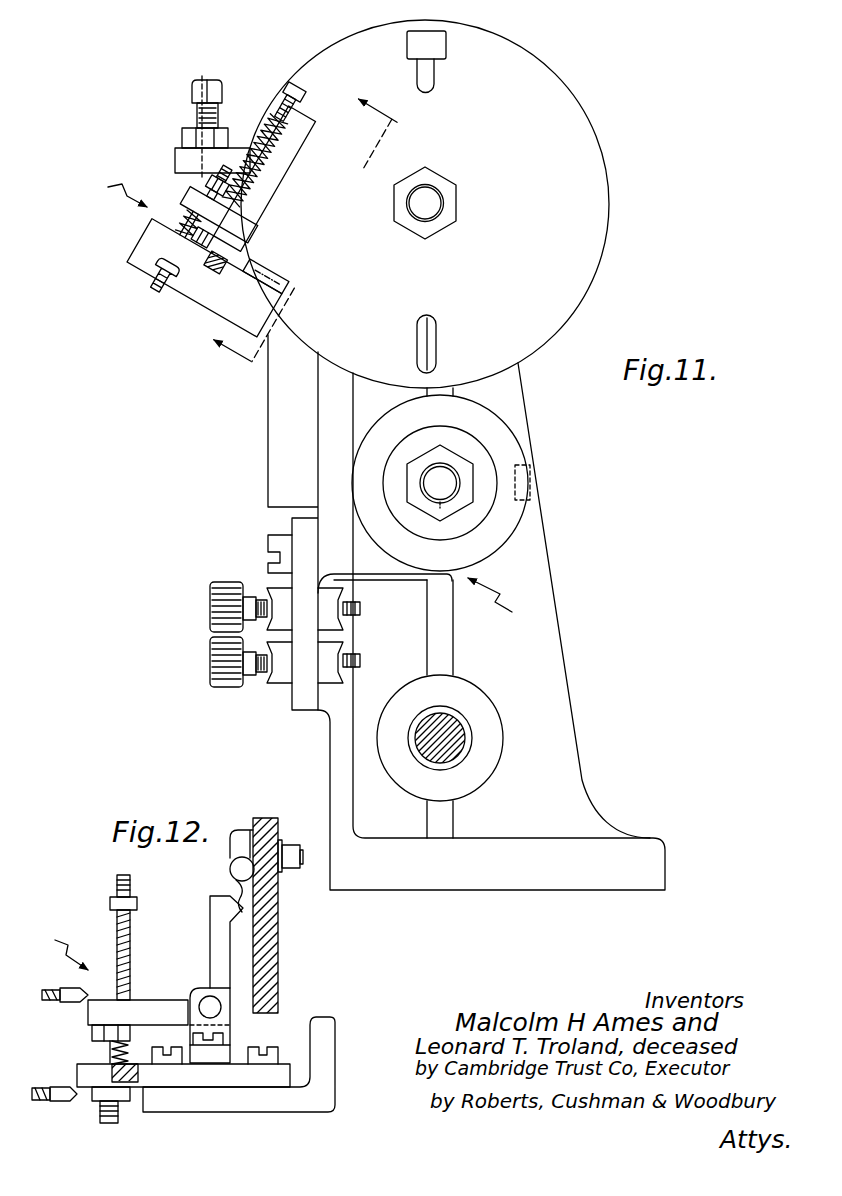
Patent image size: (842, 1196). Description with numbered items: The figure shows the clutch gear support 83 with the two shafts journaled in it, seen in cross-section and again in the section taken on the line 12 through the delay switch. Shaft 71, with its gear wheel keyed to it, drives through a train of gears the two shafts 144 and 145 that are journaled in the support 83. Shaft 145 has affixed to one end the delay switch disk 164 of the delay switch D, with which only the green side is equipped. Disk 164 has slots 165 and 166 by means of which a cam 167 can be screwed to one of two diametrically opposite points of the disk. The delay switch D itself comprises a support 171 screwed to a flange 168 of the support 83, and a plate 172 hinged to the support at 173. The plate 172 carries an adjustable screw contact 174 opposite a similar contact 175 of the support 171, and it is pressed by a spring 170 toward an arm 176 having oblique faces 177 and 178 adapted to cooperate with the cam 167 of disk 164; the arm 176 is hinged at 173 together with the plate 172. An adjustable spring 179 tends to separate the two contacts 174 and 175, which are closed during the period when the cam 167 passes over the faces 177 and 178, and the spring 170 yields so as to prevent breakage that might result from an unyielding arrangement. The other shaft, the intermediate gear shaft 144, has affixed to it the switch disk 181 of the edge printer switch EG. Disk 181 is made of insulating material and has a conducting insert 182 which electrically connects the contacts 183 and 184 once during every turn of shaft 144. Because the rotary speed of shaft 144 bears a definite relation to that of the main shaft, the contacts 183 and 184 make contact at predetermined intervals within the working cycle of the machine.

In FIG. 11, the section line 12— 12 is at (321, 244).
In FIG. 11, the shaft 71 is at (455, 733).
In FIG. 11, the clutch gear support 83 is at (548, 590).
In FIG. 11, the intermediate gear shaft 144 is at (447, 488).
In FIG. 11, the shaft 145 is at (440, 205).
In FIG. 11, the delay switch disk 164 is at (592, 158).
In FIG. 12, the delay switch disk 164 is at (278, 915).
In FIG. 11, the slot 165 is at (434, 76).
In FIG. 11, the slot 166 is at (436, 344).
In FIG. 11, the cam 167 is at (440, 42).
In FIG. 12, the cam 167 is at (245, 829).
In FIG. 11, the flange 168 is at (218, 305).
In FIG. 12, the flange 168 is at (297, 1103).
In FIG. 11, the spring 170 is at (273, 146).
In FIG. 12, the spring 170 is at (120, 935).
In FIG. 11, the support 171 is at (153, 238).
In FIG. 12, the support 171 is at (190, 1082).
In FIG. 11, the plate 172 is at (219, 214).
In FIG. 12, the plate 172 is at (148, 1012).
In FIG. 12, the hinge 173 is at (212, 1010).
In FIG. 11, the adjustable screw contact 174 is at (190, 214).
In FIG. 12, the adjustable screw contact 174 is at (108, 1040).
In FIG. 11, the contact 175 is at (197, 223).
In FIG. 12, the contact 175 is at (105, 1050).
In FIG. 11, the arm 176 is at (254, 212).
In FIG. 12, the arm 176 is at (210, 918).
In FIG. 12, the oblique face 177 is at (238, 890).
In FIG. 12, the oblique face 178 is at (243, 910).
In FIG. 11, the adjustable spring 179 is at (252, 255).
In FIG. 12, the adjustable spring 179 is at (140, 1072).
In FIG. 11, the switch disk 181 is at (503, 440).
In FIG. 11, the conducting insert 182 is at (525, 488).
In FIG. 11, the contact 183 is at (385, 580).
In FIG. 11, the contact 184 is at (416, 598).
In FIG. 11, the delay switch D is at (114, 189).
In FIG. 12, the delay switch D is at (59, 942).
In FIG. 11, the edge printer switch EG is at (505, 607).